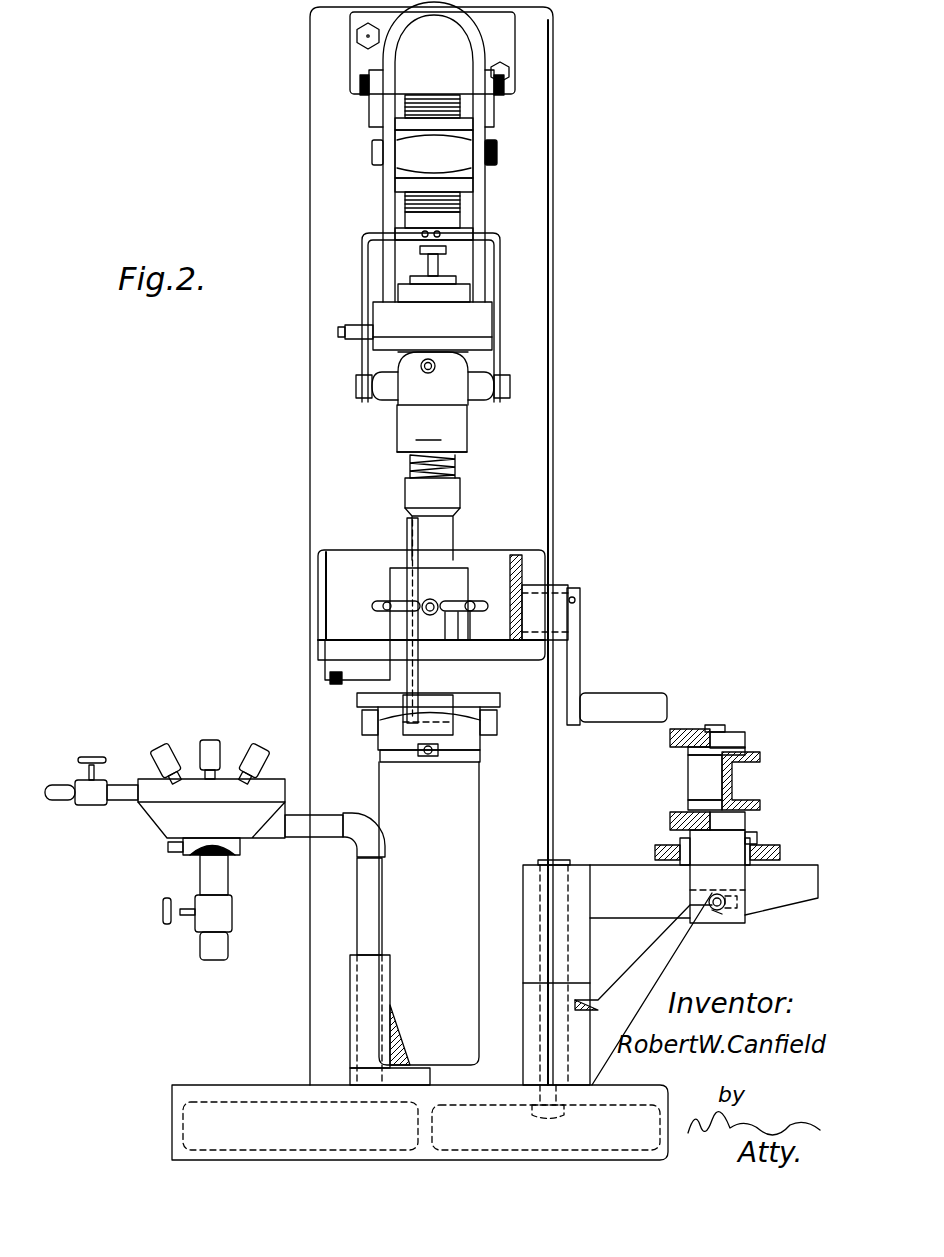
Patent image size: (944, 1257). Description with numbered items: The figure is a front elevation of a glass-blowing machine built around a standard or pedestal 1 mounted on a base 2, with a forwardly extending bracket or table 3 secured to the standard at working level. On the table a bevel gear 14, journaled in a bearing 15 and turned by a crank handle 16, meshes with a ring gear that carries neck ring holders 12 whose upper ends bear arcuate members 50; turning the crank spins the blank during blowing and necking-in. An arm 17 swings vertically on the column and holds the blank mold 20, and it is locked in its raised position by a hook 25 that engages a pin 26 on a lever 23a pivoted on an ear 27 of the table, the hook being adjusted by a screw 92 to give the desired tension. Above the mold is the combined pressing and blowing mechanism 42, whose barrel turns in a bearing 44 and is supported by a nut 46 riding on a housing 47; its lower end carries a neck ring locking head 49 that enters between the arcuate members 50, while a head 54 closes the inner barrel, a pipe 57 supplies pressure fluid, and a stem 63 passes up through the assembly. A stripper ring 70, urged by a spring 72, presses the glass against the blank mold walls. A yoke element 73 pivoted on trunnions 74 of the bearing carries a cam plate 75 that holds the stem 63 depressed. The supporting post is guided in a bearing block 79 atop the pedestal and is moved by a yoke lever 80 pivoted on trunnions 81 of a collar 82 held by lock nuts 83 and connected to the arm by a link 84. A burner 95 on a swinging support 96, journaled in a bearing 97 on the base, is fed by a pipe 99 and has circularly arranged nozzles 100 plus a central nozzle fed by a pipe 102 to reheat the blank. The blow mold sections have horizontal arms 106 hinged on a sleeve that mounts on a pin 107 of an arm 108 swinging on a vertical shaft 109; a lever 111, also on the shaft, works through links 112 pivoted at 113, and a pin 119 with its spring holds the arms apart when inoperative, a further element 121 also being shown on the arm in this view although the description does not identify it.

The standard or pedestal 1 is at (555, 382).
The base 2 is at (228, 1085).
The bracket or table 3 is at (320, 650).
The neck ring holders 12 is at (440, 628).
The bevel gear 14 is at (516, 558).
The bearing 15 is at (556, 585).
The crank handle 16 is at (580, 668).
The arm 17 is at (478, 748).
The blank mold 20 is at (475, 760).
The lever 23a is at (407, 535).
The hook 25 is at (430, 655).
The pin 26 is at (440, 672).
The ear 27 is at (385, 652).
The combined pressing and blowing mechanism 42 is at (432, 428).
The bearing 44 is at (455, 395).
The nut 46 is at (467, 295).
The housing 47 is at (482, 318).
The neck ring locking head 49 is at (462, 437).
The arcuate members 50 is at (468, 600).
The head 54 is at (445, 280).
The pipe 57 is at (422, 372).
The stem 63 is at (427, 260).
The stripper ring 70 is at (450, 500).
The spring 72 is at (414, 468).
The yoke element 73 is at (500, 241).
The trunnions 74 is at (505, 387).
The cam plate 75 is at (420, 252).
The bearing block 79 is at (456, 50).
The yoke lever 80 is at (475, 33).
The trunnions 81 is at (497, 148).
The collar 82 is at (400, 167).
The lock nuts 83 is at (460, 125).
The link 84 is at (376, 202).
The screw 92 is at (428, 762).
The burner 95 is at (165, 818).
The swinging support 96 is at (378, 910).
The bearing 97 is at (350, 1012).
The pipe 99 is at (60, 783).
The nozzles 100 is at (245, 745).
The pipe 102 is at (198, 945).
The horizontal arm 106 is at (682, 728).
The pin 107 is at (725, 730).
The arm 108 is at (680, 968).
The vertical shaft 109 is at (523, 1032).
The lever 111 is at (598, 868).
The links 112 is at (655, 851).
The pivot connection 113 is at (667, 832).
The pin 119 is at (720, 910).
The bolt 121 is at (705, 900).